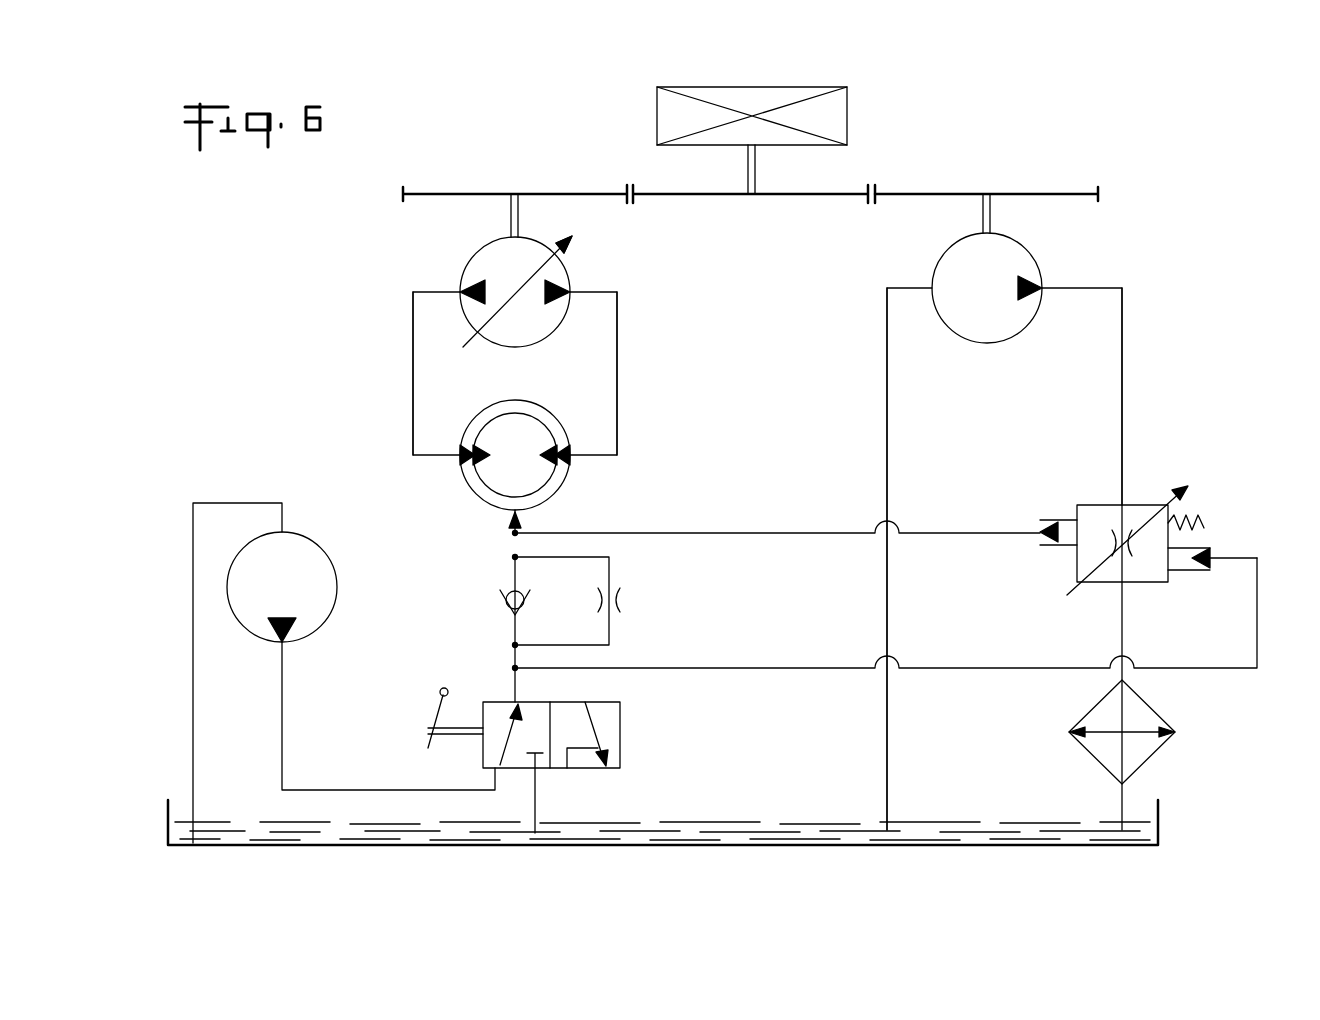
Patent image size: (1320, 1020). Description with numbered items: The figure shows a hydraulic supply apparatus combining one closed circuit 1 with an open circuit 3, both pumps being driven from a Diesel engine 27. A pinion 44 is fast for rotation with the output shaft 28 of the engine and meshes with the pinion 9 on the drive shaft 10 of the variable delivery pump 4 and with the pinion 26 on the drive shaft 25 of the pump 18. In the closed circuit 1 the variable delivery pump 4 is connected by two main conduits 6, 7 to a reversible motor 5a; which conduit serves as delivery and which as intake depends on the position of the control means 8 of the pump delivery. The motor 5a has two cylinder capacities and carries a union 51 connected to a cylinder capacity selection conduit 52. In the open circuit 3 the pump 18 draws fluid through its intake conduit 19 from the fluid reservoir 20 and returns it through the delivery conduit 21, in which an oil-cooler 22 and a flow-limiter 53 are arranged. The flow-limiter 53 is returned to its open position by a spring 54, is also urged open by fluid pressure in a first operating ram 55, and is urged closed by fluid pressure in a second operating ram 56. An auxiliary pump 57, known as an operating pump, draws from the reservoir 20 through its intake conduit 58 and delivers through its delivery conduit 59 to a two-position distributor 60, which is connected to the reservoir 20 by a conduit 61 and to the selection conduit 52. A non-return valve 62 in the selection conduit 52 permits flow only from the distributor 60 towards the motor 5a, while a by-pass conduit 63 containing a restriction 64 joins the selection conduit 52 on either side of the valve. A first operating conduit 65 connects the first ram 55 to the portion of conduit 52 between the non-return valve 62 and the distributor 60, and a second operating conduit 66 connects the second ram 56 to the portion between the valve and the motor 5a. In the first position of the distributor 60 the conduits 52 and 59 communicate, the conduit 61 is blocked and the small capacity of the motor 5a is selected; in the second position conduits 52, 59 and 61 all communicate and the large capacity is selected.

The closed circuit 1 is at (605, 336).
The open circuit 3 is at (1115, 358).
The variable delivery pump 4 is at (482, 258).
The motor 5a is at (518, 432).
The main conduit 6 is at (413, 400).
The main conduit 7 is at (617, 393).
The control means 8 is at (568, 240).
The pinion 9 is at (403, 194).
The drive shaft 10 is at (511, 215).
The pump 18 is at (1005, 335).
The intake conduit 19 is at (887, 450).
The fluid reservoir 20 is at (1158, 800).
The delivery conduit 21 is at (1122, 440).
The oil-cooler 22 is at (1158, 708).
The drive shaft 25 is at (992, 210).
The pinion 26 is at (878, 190).
The Diesel engine 27 is at (848, 112).
The output shaft 28 is at (756, 164).
The pinion 44 is at (640, 188).
The union 51 is at (524, 520).
The cylinder capacity selection conduit 52 is at (512, 568).
The flow-limiter 53 is at (1133, 548).
The spring 54 is at (1195, 515).
The first operating ram 55 is at (1185, 573).
The second operating ram 56 is at (1058, 522).
The auxiliary pump 57 is at (305, 550).
The intake conduit 58 is at (252, 486).
The delivery conduit 59 is at (282, 690).
The two-position distributor 60 is at (630, 736).
The conduit 61 is at (540, 796).
The non-return valve 62 is at (502, 603).
The by-pass conduit 63 is at (615, 565).
The restriction 64 is at (628, 605).
The first operating conduit 65 is at (815, 668).
The second operating conduit 66 is at (820, 535).